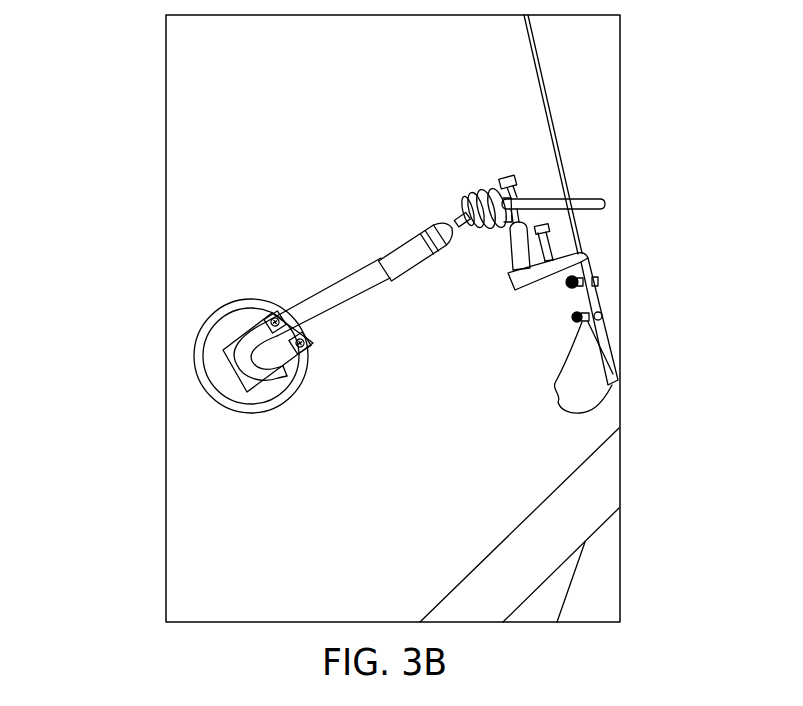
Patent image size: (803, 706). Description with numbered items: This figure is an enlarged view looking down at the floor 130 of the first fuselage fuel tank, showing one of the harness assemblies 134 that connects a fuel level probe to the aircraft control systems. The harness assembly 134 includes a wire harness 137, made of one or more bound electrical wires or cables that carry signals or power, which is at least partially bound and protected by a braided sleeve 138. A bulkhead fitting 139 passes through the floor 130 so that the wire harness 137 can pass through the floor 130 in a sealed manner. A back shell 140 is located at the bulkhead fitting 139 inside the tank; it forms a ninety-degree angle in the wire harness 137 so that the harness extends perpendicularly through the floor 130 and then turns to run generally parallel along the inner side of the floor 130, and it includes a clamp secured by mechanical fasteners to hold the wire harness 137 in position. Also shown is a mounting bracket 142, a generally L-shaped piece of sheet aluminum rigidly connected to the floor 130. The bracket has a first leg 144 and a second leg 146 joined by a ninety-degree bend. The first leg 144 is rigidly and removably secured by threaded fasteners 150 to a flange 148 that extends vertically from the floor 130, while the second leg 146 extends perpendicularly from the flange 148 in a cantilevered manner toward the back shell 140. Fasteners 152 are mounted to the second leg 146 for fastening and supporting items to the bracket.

The floor 130 is at (372, 103).
The harness assembly 134 is at (318, 290).
The wire harness 137 is at (453, 221).
The braided sleeve 138 is at (345, 282).
The bulkhead fitting 139 is at (217, 372).
The back shell 140 is at (262, 330).
The mounting bracket 142 is at (602, 297).
The first leg 144 is at (580, 283).
The second leg 146 is at (536, 270).
The flange 148 is at (605, 348).
The threaded fasteners 150 is at (584, 318).
The fasteners 152 is at (548, 238).